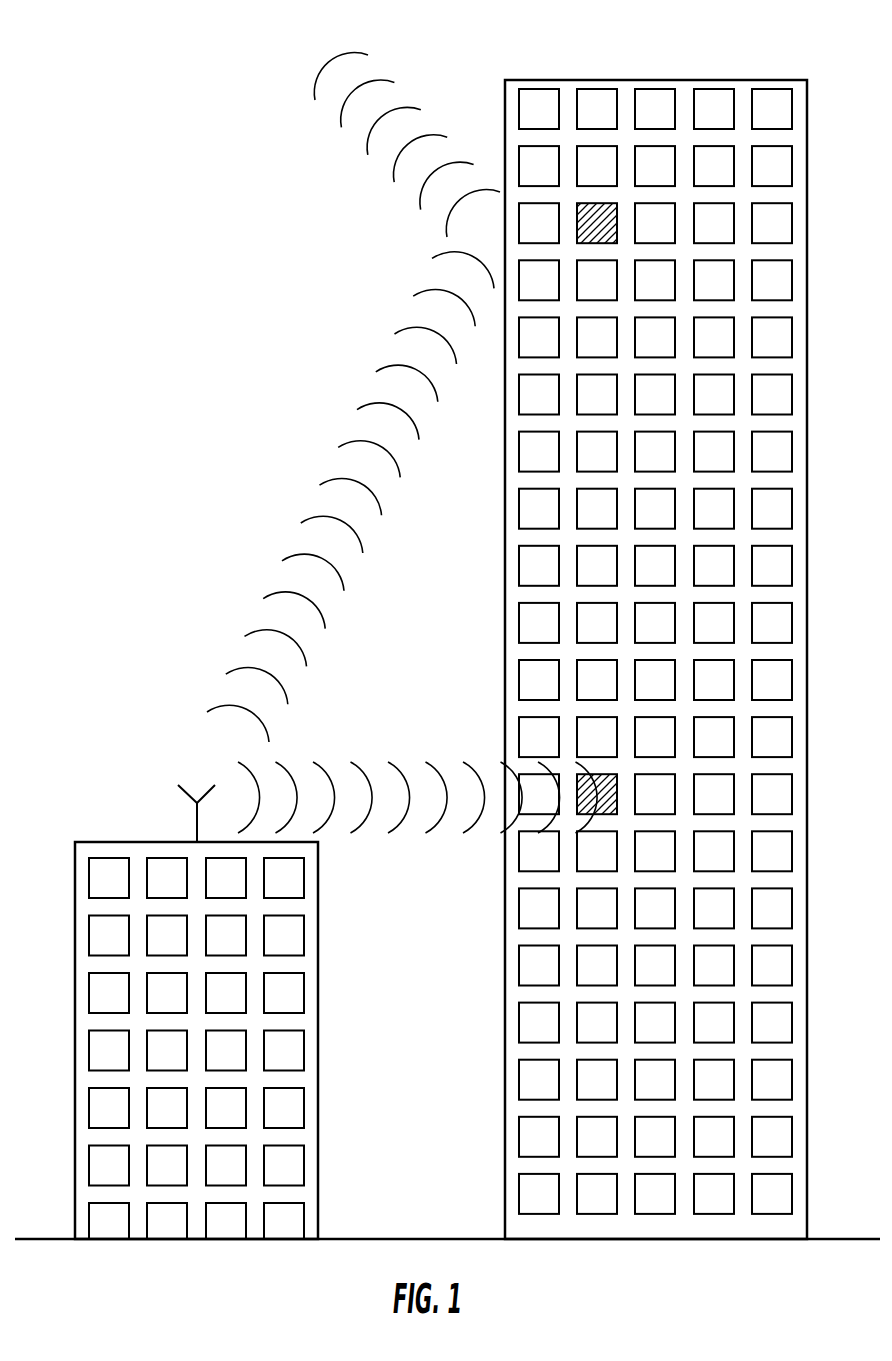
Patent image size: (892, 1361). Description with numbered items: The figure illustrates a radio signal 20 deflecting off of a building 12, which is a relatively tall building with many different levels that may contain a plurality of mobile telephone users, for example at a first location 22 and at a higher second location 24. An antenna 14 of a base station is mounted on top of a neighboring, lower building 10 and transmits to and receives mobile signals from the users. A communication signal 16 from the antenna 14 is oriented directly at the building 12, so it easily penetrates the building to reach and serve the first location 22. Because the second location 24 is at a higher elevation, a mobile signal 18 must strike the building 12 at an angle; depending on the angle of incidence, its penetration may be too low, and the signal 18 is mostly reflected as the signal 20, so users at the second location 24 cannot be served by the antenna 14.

The building 10 is at (318, 1155).
The building 12 is at (503, 1097).
The antenna 14 is at (193, 821).
The communication signal 16 is at (420, 772).
The mobile signal 18 is at (285, 577).
The radio signal 20 is at (382, 157).
The first location 22 is at (598, 815).
The second location 24 is at (600, 207).